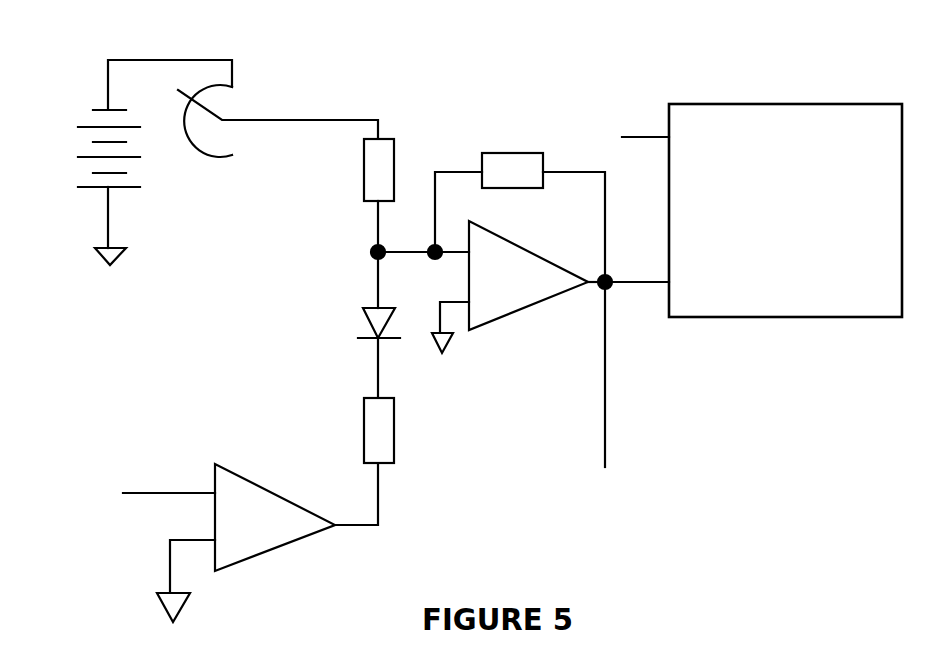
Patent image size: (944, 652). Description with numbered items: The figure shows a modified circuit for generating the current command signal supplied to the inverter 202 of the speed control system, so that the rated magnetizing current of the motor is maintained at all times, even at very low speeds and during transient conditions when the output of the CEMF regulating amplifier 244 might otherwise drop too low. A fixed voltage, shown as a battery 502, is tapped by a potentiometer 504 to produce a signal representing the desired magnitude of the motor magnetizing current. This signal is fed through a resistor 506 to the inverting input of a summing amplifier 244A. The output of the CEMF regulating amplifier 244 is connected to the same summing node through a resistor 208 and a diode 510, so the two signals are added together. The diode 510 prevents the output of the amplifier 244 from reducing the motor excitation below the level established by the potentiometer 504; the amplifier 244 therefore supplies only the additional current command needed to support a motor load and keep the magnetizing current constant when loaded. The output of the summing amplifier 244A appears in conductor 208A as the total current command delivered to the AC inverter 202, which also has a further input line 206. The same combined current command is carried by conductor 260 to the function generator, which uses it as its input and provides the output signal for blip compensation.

The battery 502 is at (68, 130).
The potentiometer 504 is at (207, 155).
The resistor 506 is at (393, 140).
The diode 510 is at (358, 317).
The resistor 208 is at (396, 417).
The summing amplifier 244A is at (525, 310).
The conductor 208A is at (607, 290).
The conductor 260 is at (606, 425).
The inverter 202 is at (768, 102).
The inverter input line 206 is at (642, 132).
The CEMF regulating amplifier 244 is at (282, 548).